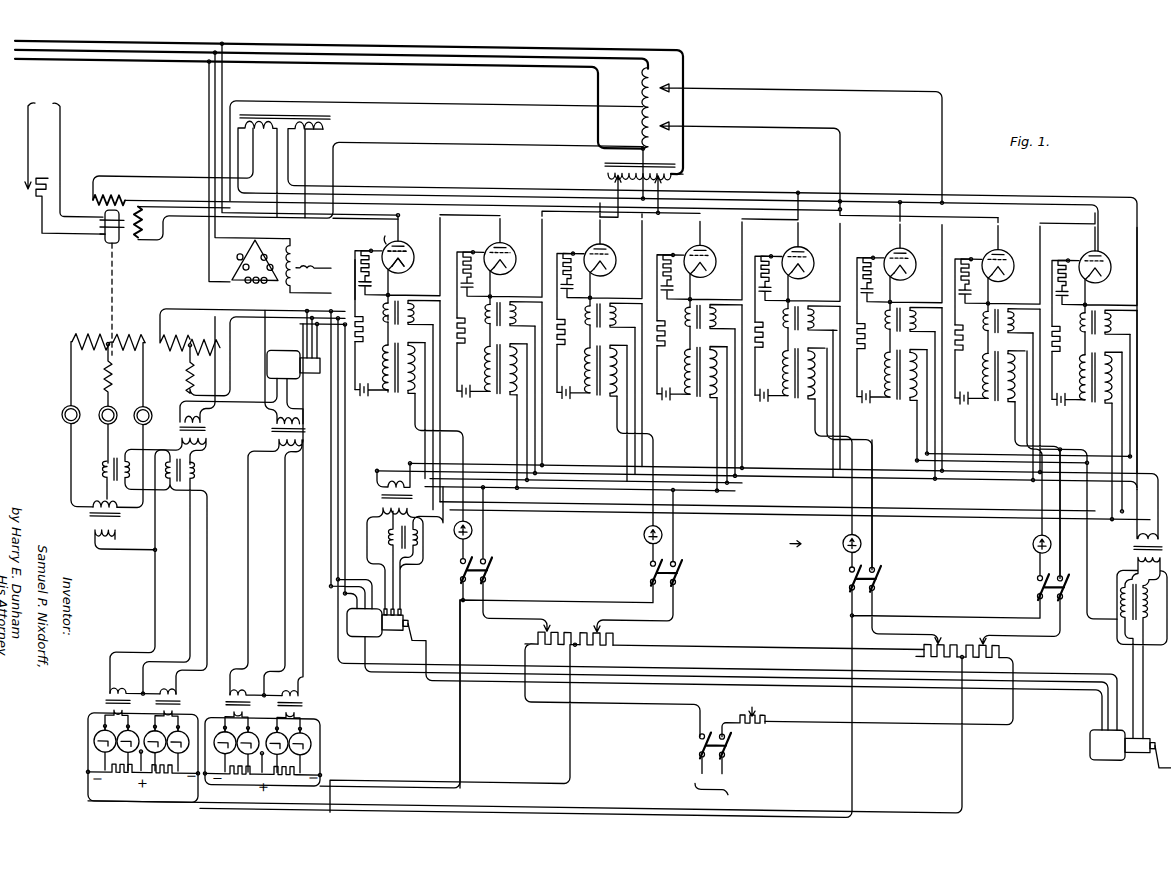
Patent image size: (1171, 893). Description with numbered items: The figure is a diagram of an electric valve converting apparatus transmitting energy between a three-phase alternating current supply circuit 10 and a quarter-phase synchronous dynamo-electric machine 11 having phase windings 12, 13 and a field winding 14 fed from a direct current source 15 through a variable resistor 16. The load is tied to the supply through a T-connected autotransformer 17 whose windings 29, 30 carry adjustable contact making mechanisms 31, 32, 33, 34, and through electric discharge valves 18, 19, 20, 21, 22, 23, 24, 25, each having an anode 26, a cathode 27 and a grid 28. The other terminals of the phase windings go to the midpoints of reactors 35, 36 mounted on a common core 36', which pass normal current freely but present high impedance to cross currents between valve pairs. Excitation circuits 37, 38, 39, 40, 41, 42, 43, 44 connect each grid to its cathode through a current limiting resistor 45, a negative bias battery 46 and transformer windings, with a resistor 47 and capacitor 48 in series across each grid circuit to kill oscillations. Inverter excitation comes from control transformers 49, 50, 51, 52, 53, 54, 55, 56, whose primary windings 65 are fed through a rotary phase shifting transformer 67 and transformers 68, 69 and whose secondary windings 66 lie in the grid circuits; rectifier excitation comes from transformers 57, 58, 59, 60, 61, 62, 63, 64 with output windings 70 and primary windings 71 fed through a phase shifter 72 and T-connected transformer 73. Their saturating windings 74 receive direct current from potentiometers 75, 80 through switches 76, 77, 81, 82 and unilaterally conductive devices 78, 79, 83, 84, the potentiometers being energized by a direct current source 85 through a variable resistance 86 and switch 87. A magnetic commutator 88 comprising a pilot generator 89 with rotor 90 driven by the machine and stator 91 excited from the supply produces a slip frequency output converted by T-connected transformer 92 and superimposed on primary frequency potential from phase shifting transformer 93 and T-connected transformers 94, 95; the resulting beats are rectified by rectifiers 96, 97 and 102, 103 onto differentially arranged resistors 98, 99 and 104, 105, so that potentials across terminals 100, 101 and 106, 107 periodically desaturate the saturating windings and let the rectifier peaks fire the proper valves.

The alternating current supply circuit 10 is at (83, 72).
The dynamo-electric machine 11 is at (58, 262).
The phase winding 12 is at (90, 205).
The phase winding 13 is at (135, 250).
The field winding 14 is at (104, 250).
The source of direct current 15 is at (64, 154).
The variable resistor 16 is at (34, 206).
The transformer 17 is at (622, 135).
The electric discharge valve 18 is at (409, 245).
The electric discharge valve 19 is at (511, 245).
The electric discharge valve 20 is at (609, 245).
The electric discharge valve 21 is at (709, 245).
The electric discharge valve 22 is at (807, 245).
The electric discharge valve 23 is at (909, 245).
The electric discharge valve 24 is at (1007, 245).
The electric discharge valve 25 is at (1104, 246).
The anode 26 is at (388, 242).
The cathode 27 is at (406, 264).
The control electrode or grid 28 is at (410, 251).
The winding 29 is at (668, 168).
The winding 30 is at (651, 76).
The adjustable contact making mechanism 31 is at (606, 177).
The adjustable contact making mechanism 32 is at (670, 177).
The adjustable contact making mechanism 33 is at (716, 127).
The adjustable contact making mechanism 34 is at (707, 71).
The reactor 35 is at (256, 122).
The reactor 36 is at (327, 163).
The common core 36' is at (712, 293).
The excitation circuit 37 is at (376, 355).
The excitation circuit 38 is at (474, 357).
The excitation circuit 39 is at (574, 357).
The excitation circuit 40 is at (674, 357).
The excitation circuit 41 is at (772, 357).
The excitation circuit 42 is at (874, 357).
The excitation circuit 43 is at (972, 357).
The excitation circuit 44 is at (1069, 357).
The current limiting resistor 45 is at (355, 292).
The negative bias battery 46 is at (358, 398).
The resistor 47 is at (368, 250).
The capacitor 48 is at (360, 283).
The control transformer 49 is at (387, 305).
The control transformer 50 is at (489, 305).
The control transformer 51 is at (589, 305).
The control transformer 52 is at (689, 305).
The control transformer 53 is at (787, 305).
The control transformer 54 is at (889, 305).
The control transformer 55 is at (987, 305).
The control transformer 56 is at (1084, 305).
The rectifier excitation transformer 57 is at (388, 398).
The rectifier excitation transformer 58 is at (496, 394).
The rectifier excitation transformer 59 is at (597, 394).
The rectifier excitation transformer 60 is at (696, 394).
The rectifier excitation transformer 61 is at (795, 394).
The rectifier excitation transformer 62 is at (897, 394).
The rectifier excitation transformer 63 is at (996, 396).
The rectifier excitation transformer 64 is at (1092, 394).
The primary winding 65 is at (414, 306).
The secondary winding 66 is at (386, 317).
The rotary phase shifting transformer 67 is at (1093, 752).
The transformer 68 is at (272, 248).
The T-connected transformer 69 is at (1130, 544).
The secondary winding 70 is at (384, 362).
The primary winding 71 is at (413, 350).
The rotary phase shifting transformer 72 is at (359, 642).
The T-connected transformer 73 is at (386, 490).
The saturating winding 74 is at (397, 392).
The potentiometer 75 is at (577, 631).
The switching means 76 is at (490, 574).
The switching means 77 is at (683, 575).
The unilaterally conductive device 78 is at (473, 533).
The unilaterally conductive device 79 is at (643, 536).
The potentiometer 80 is at (961, 639).
The switching means 81 is at (880, 575).
The switching means 82 is at (1035, 588).
The unilaterally conductive device 83 is at (842, 542).
The unilaterally conductive device 84 is at (1032, 540).
The source of direct current 85 is at (730, 790).
The variable resistance 86 is at (768, 723).
The switching means 87 is at (730, 744).
The magnetic commutator 88 is at (52, 399).
The pilot generator 89 is at (143, 333).
The rotor 90 is at (102, 344).
The stator 91 is at (189, 344).
The T-connected transformer 92 is at (98, 474).
The phase shifting transformer 93 is at (269, 356).
The T-connected transformer 94 is at (207, 436).
The T-connected transformer 95 is at (277, 438).
The rectifier 96 is at (108, 703).
The rectifier 97 is at (181, 703).
The resistor 98 is at (116, 783).
The resistor 99 is at (170, 785).
The terminal 100 is at (88, 779).
The terminal 101 is at (196, 783).
The rectifier 102 is at (228, 698).
The rectifier 103 is at (303, 712).
The resistor 104 is at (250, 776).
The resistor 105 is at (280, 776).
The terminal 106 is at (208, 777).
The terminal 107 is at (321, 781).